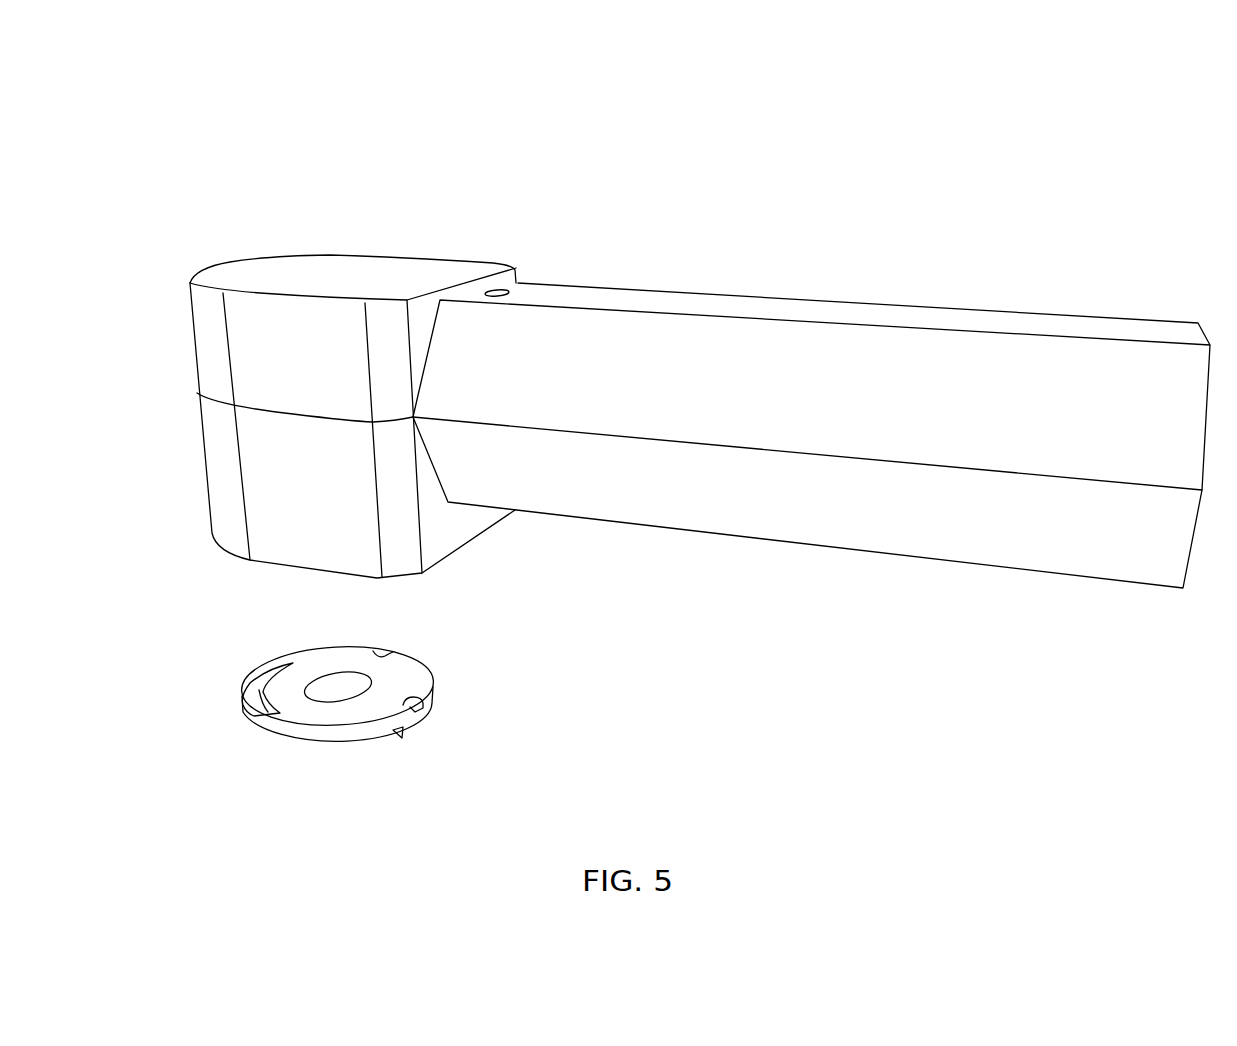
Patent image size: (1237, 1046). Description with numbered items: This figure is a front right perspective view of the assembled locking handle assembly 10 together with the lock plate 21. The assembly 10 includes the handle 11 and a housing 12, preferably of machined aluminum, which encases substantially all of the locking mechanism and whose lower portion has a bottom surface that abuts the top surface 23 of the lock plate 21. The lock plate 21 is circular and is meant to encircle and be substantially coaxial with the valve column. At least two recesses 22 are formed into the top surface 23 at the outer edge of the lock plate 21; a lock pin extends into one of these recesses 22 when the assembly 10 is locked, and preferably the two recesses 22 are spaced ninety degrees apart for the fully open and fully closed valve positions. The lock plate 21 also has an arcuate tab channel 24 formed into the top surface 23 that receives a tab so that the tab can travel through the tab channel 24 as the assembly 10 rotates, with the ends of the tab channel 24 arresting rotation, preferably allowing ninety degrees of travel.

The assembly 10 is at (866, 88).
The handle 11 is at (835, 550).
The housing 12 is at (200, 557).
The lock plate 21 is at (312, 743).
The recesses 22 is at (379, 651).
The top surface 23 is at (347, 724).
The tab channel 24 is at (242, 693).